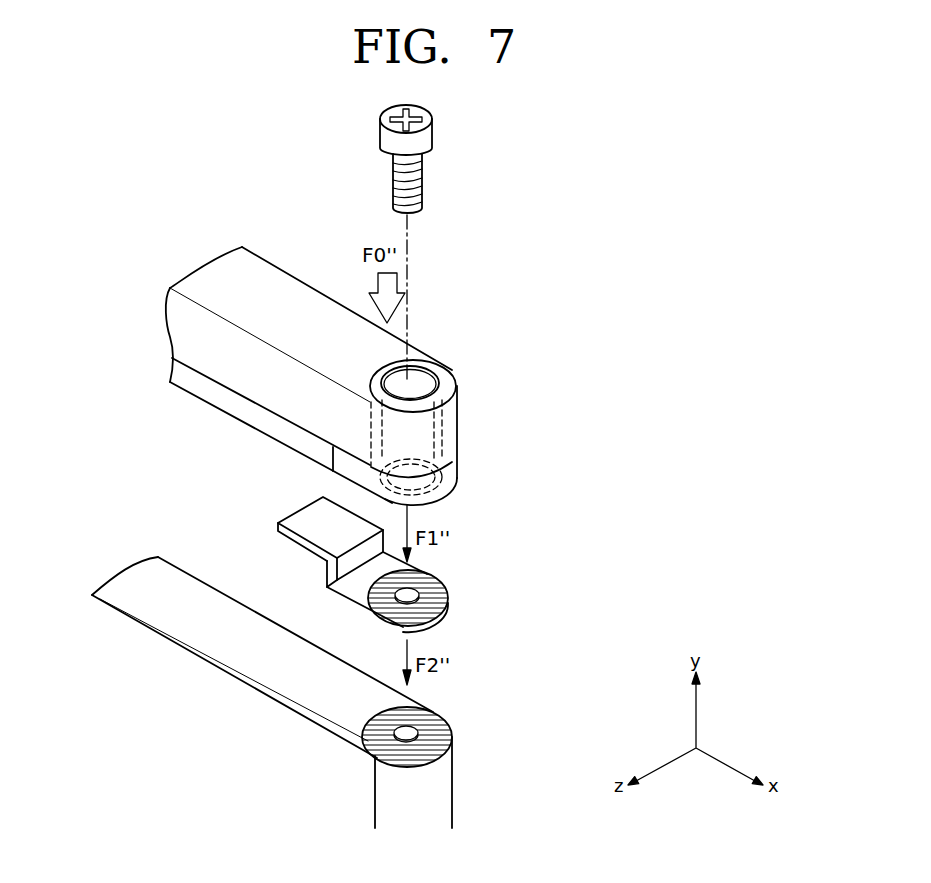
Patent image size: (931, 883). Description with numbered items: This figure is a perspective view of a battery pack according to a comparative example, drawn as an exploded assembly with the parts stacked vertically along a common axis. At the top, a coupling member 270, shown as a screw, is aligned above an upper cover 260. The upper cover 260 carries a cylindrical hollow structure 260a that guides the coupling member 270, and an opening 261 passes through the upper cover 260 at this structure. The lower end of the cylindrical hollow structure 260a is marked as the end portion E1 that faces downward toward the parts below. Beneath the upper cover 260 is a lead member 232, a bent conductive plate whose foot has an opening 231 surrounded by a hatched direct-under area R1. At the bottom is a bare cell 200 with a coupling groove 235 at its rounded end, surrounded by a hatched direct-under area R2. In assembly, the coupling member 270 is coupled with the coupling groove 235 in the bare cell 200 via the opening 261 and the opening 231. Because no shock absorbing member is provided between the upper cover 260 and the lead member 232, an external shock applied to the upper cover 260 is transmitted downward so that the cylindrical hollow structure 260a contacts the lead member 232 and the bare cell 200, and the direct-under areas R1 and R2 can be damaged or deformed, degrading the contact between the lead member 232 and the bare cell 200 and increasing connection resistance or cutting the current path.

The coupling member 270 is at (380, 138).
The upper cover 260 is at (223, 278).
The cylindrical hollow structure 260a is at (430, 423).
The opening of the upper cover 261 is at (420, 384).
The end portion of arm E1 is at (447, 500).
The lead member 232 is at (310, 546).
The opening of the lead member 231 is at (441, 597).
The direct-under area of the lead member R1 is at (437, 605).
The bare cell 200 is at (322, 692).
The direct-under area of the bare cell R2 is at (420, 722).
The coupling groove 235 is at (412, 731).